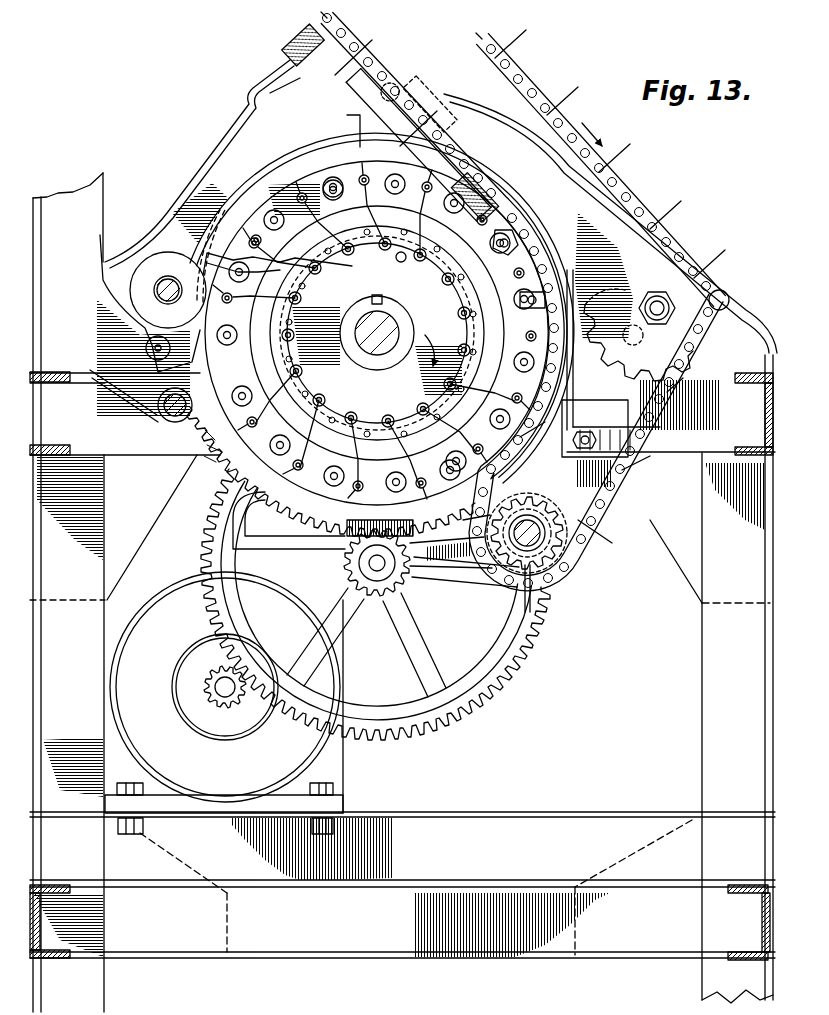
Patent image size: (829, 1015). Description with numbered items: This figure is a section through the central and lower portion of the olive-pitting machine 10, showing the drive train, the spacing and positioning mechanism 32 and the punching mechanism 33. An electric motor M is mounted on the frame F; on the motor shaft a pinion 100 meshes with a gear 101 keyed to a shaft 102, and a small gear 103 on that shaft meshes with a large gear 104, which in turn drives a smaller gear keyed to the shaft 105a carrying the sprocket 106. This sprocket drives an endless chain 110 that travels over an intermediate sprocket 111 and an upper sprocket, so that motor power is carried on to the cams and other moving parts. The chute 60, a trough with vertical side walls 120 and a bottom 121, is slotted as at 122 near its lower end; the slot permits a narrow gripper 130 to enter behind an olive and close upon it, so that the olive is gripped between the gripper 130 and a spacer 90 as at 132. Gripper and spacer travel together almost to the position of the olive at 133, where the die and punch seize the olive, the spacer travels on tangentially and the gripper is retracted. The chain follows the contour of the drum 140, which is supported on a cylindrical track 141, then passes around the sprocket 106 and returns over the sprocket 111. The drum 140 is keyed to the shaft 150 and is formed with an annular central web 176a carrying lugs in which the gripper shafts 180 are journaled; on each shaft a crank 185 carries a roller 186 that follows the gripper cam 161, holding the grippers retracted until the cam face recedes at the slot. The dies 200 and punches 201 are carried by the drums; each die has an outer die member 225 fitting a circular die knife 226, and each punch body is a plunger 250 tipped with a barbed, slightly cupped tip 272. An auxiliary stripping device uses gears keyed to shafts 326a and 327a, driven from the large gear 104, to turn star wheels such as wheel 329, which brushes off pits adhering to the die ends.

The machine 10 is at (440, 108).
The spacing and positioning mechanism 32 is at (390, 70).
The punching mechanism 33 is at (500, 170).
The chute 60 is at (298, 40).
The spacer 90 is at (448, 146).
The pinion 100 is at (222, 700).
The gear 101 is at (480, 713).
The shaft 102 is at (368, 572).
The small gear 103 is at (384, 600).
The large gear 104 is at (275, 508).
The shaft 105a is at (521, 550).
The sprocket 106 is at (560, 562).
The endless chain 110 is at (441, 97).
The intermediate sprocket 111 is at (684, 283).
The vertical side walls 120 is at (322, 70).
The bottom 121 is at (358, 128).
The slot 122 is at (460, 162).
The gripper 130 is at (308, 195).
The gripping position 132 is at (520, 236).
The olive position 133 is at (562, 396).
The drum 140 is at (266, 196).
The cylindrical track 141 is at (560, 276).
The shaft 150 is at (377, 312).
The gripper cam 161 is at (401, 252).
The annular central web 176a is at (246, 446).
The shaft 180 is at (465, 313).
The crank 185 is at (462, 312).
The roller 186 is at (420, 300).
The dies 200 is at (336, 181).
The punches 201 is at (256, 232).
The outer die member 225 is at (392, 487).
The circular die knife 226 is at (450, 478).
The plunger 250 is at (503, 205).
The tip 272 is at (376, 458).
The shaft 326a is at (168, 306).
The shaft 327a is at (172, 410).
The star wheel 329 is at (125, 252).
The frame F is at (86, 178).
The electric motor M is at (225, 687).